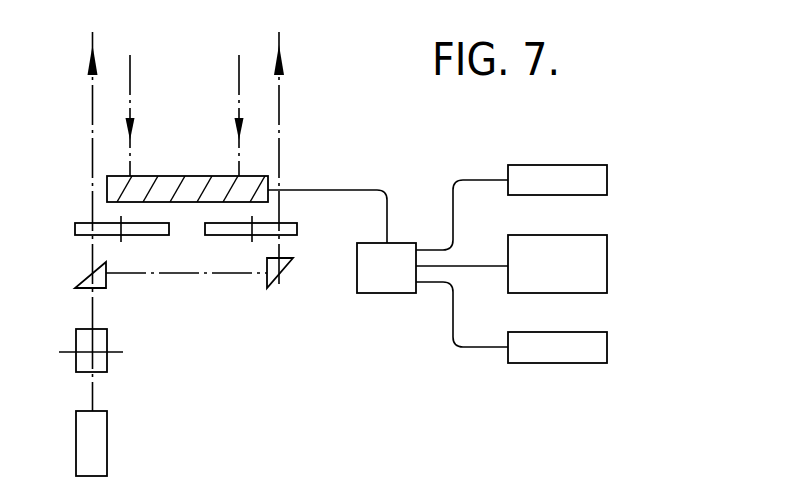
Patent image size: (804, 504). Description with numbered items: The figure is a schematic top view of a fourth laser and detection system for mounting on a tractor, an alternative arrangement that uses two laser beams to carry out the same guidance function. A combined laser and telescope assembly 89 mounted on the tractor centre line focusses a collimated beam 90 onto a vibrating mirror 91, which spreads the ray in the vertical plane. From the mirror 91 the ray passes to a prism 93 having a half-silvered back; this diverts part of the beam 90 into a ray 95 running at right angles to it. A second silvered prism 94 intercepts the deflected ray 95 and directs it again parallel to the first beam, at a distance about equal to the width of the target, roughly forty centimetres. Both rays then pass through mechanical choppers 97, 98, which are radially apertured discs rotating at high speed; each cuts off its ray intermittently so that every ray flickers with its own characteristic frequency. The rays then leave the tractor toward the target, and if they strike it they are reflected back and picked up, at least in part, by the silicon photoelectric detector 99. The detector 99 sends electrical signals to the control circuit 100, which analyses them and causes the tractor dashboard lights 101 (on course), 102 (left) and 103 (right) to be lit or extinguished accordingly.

The combined laser and telescope assembly 89 is at (107, 437).
The collimated beam 90 is at (95, 375).
The vibrating mirror 91 is at (106, 333).
The prism 93 is at (82, 283).
The second silvered prism 94 is at (290, 262).
The ray 95 is at (195, 274).
The mechanical chopper 97 is at (142, 236).
The mechanical chopper 98 is at (237, 236).
The silicon photoelectric detector 99 is at (184, 176).
The control circuit 100 is at (386, 294).
The tractor dashboard light (on course) 101 is at (597, 283).
The tractor dashboard light (left) 102 is at (593, 187).
The tractor dashboard light (right) 103 is at (595, 350).